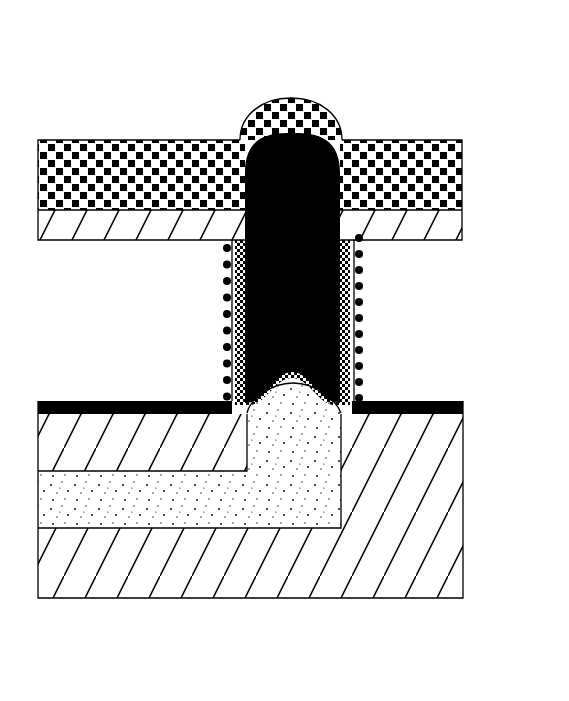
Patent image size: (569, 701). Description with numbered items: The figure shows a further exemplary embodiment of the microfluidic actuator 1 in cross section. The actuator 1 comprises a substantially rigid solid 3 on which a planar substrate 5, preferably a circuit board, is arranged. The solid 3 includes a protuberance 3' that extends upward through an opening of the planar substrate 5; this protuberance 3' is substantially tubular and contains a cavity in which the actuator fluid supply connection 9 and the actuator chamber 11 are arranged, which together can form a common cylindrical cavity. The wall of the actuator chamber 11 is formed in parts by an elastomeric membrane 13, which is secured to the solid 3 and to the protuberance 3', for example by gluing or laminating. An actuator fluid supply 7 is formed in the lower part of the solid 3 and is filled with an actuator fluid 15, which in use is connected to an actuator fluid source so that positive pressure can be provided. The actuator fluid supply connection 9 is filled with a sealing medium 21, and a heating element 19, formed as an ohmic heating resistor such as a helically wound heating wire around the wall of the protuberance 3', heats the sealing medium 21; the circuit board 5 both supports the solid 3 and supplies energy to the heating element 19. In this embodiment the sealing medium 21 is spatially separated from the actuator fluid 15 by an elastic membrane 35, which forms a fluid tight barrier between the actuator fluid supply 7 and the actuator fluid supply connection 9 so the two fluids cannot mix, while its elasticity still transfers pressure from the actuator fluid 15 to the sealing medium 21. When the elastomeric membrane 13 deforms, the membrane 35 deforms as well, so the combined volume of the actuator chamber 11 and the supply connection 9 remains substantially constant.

The actuator 1 is at (90, 78).
The solid 3 is at (272, 499).
The protuberance 3' is at (376, 320).
The planar substrate 5 is at (438, 407).
The actuator fluid supply 7 is at (52, 523).
The actuator fluid supply connection 9 is at (243, 252).
The actuator chamber 11 is at (313, 138).
The elastomeric membrane 13 is at (405, 140).
The actuator fluid 15 is at (315, 487).
The heating element 19 is at (225, 283).
The sealing medium 21 is at (250, 316).
The elastic membrane 35 is at (344, 363).